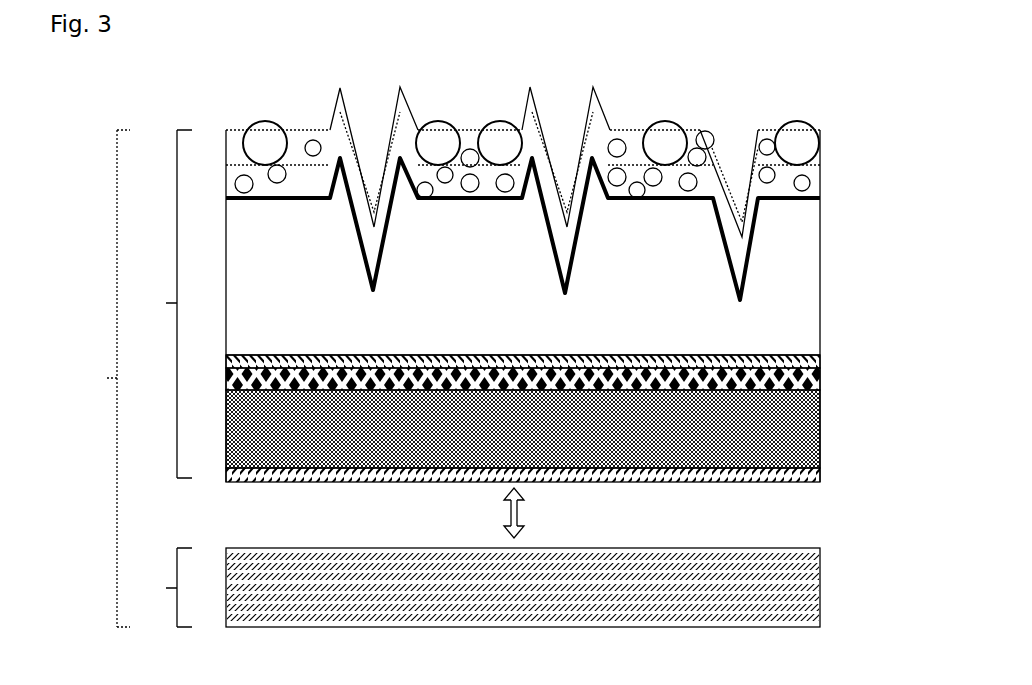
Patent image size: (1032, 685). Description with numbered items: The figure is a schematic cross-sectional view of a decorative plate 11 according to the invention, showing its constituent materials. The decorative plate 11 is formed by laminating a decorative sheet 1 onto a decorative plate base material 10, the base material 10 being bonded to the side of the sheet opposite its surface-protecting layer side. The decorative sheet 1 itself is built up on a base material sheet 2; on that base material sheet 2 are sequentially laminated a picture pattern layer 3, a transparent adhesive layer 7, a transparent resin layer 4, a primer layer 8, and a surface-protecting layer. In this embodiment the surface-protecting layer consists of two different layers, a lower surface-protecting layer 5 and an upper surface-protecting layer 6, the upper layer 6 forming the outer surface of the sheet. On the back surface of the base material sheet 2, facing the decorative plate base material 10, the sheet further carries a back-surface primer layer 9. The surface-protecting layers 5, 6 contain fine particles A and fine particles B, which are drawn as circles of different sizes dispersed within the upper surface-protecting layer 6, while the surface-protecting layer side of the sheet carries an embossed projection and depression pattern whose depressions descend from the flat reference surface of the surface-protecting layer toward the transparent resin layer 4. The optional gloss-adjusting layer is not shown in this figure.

The decorative sheet 1 is at (162, 304).
The base material sheet 2 is at (838, 435).
The picture pattern layer 3 is at (838, 390).
The transparent resin layer 4 is at (838, 279).
The surface-protecting layer (lower layer) 5 is at (838, 183).
The surface-protecting layer (upper layer) 6 is at (838, 148).
The transparent adhesive layer 7 is at (840, 369).
The primer layer 8 is at (838, 208).
The back-surface primer layer 9 is at (838, 488).
The decorative plate base material 10 is at (476, 587).
The decorative plate 11 is at (105, 378).
The fine particles A is at (452, 131).
The fine particles B is at (713, 130).